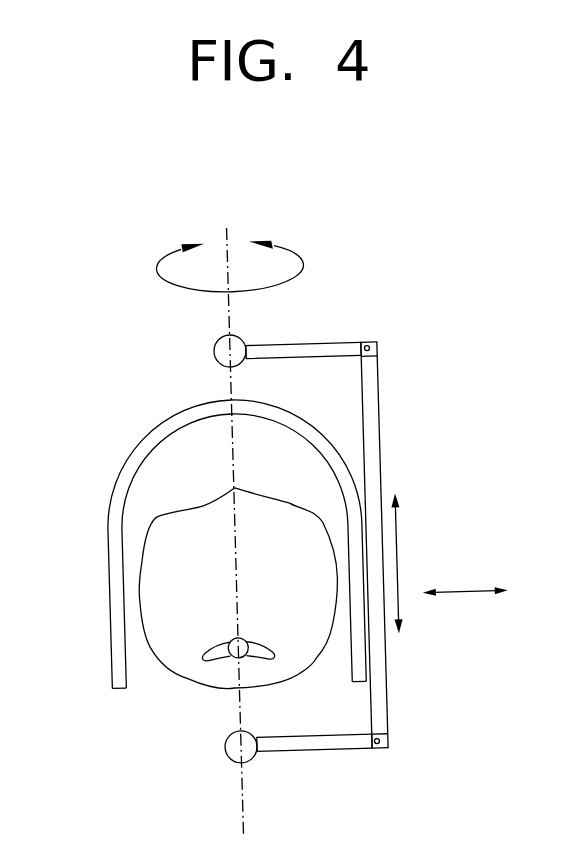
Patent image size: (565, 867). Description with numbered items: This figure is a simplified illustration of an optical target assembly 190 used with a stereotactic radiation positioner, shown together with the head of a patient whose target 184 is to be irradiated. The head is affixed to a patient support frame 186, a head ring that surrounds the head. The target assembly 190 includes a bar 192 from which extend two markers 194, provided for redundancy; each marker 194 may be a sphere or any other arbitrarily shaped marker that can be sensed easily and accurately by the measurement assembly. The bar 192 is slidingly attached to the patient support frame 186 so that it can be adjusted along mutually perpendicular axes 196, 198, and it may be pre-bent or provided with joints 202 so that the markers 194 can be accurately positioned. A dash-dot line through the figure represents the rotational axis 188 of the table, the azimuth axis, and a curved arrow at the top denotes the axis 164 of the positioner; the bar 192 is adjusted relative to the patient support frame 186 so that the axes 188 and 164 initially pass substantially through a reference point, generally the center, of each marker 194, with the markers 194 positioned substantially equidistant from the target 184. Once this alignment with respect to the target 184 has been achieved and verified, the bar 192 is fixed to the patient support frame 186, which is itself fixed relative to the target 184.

The axis 164 is at (229, 315).
The target 184 is at (244, 640).
The patient support frame 186 is at (120, 463).
The rotational axis 188 is at (229, 795).
The target assembly 190 is at (344, 544).
The bar 192 is at (375, 458).
The marker 194 is at (227, 357).
The axis 196 is at (395, 555).
The axis 198 is at (466, 600).
The joints 202 is at (377, 349).